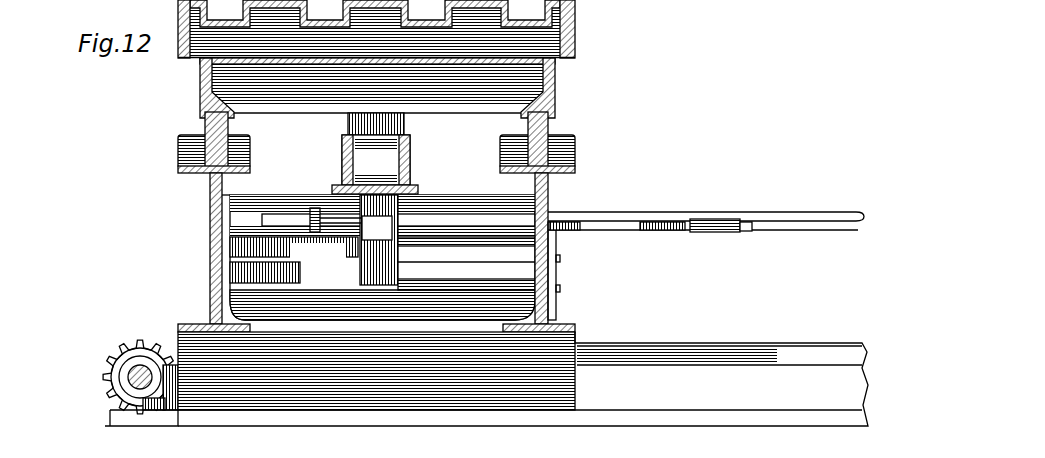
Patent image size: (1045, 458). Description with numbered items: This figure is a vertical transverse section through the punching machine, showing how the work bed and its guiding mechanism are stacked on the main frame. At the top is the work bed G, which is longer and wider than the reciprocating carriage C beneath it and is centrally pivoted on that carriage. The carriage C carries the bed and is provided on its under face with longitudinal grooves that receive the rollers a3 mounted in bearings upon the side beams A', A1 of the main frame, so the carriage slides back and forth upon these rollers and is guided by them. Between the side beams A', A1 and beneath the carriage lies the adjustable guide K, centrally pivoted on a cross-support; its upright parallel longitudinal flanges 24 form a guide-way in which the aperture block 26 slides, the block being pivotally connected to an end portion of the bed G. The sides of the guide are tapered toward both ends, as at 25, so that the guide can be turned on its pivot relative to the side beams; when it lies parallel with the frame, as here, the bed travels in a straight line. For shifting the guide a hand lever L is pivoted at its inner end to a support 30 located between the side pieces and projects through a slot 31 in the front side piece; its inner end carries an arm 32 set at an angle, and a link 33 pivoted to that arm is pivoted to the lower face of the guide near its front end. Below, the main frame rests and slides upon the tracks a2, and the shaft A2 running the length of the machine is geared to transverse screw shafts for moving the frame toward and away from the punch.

The work bed G is at (574, 20).
The reciprocating carriage C is at (556, 86).
The rollers a3 is at (590, 126).
The flanges 24 is at (344, 165).
The aperture block 26 is at (376, 161).
The adjustable guide K is at (412, 169).
The tapered sides 25 is at (334, 190).
The side beams A' is at (205, 252).
The side beam A1 is at (550, 180).
The slot 31 is at (545, 207).
The hand lever L is at (657, 216).
The arm 32 is at (294, 260).
The link 33 is at (350, 224).
The support 30 is at (466, 263).
The shaft A2 is at (132, 375).
The tracks a2 is at (489, 379).